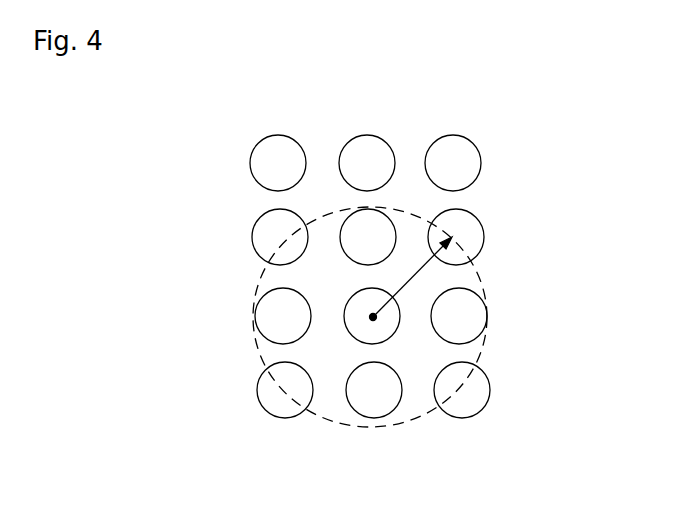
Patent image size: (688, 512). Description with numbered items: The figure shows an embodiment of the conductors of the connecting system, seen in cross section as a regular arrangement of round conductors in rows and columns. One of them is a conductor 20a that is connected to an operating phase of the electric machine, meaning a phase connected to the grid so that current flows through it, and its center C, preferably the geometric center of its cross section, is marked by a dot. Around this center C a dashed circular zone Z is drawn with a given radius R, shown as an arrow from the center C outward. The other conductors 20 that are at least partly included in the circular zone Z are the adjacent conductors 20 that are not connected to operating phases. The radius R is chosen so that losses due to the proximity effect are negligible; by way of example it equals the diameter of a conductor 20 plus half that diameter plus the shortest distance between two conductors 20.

The conductors 20 is at (266, 228).
The conductor connected to an operating phase 20a is at (367, 302).
The center C is at (373, 317).
The radius R is at (441, 191).
The circular zone Z is at (480, 275).